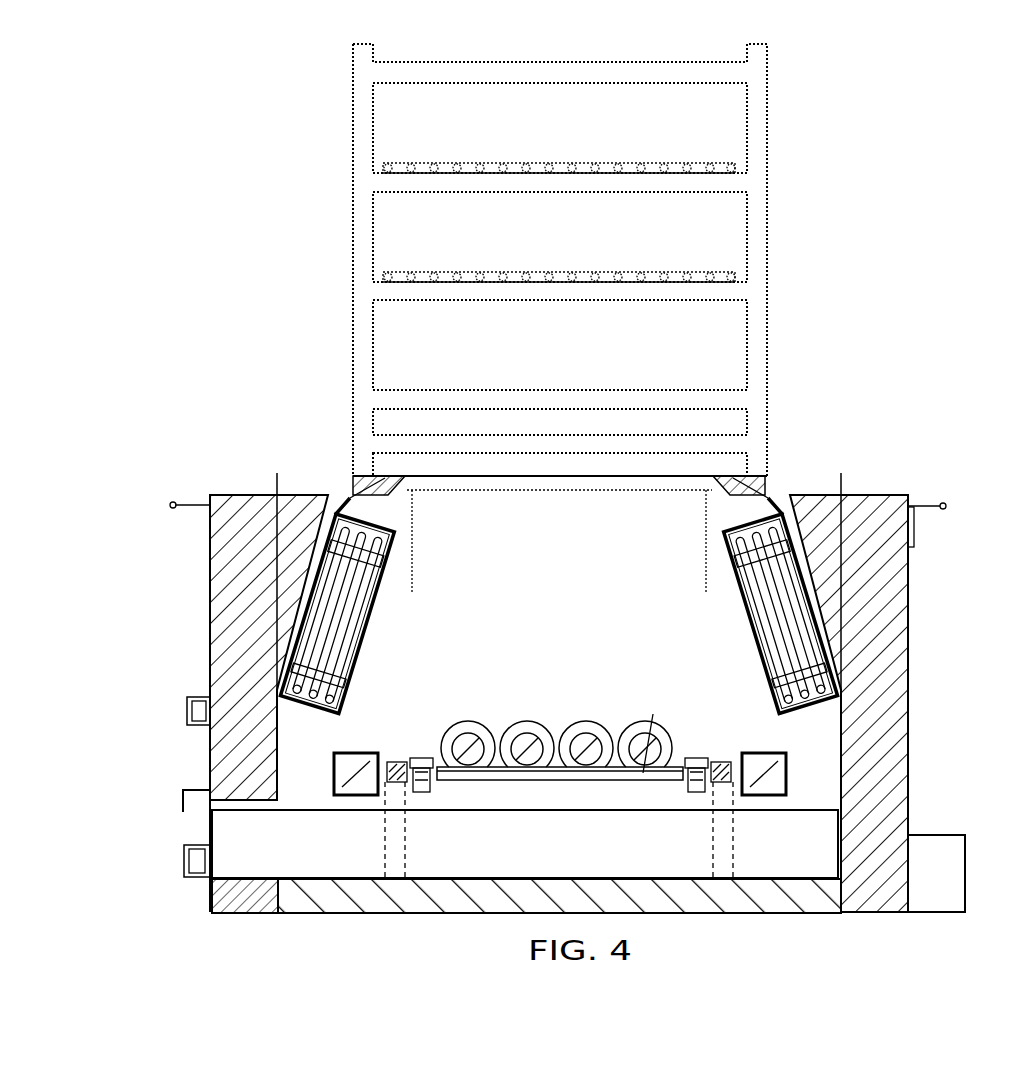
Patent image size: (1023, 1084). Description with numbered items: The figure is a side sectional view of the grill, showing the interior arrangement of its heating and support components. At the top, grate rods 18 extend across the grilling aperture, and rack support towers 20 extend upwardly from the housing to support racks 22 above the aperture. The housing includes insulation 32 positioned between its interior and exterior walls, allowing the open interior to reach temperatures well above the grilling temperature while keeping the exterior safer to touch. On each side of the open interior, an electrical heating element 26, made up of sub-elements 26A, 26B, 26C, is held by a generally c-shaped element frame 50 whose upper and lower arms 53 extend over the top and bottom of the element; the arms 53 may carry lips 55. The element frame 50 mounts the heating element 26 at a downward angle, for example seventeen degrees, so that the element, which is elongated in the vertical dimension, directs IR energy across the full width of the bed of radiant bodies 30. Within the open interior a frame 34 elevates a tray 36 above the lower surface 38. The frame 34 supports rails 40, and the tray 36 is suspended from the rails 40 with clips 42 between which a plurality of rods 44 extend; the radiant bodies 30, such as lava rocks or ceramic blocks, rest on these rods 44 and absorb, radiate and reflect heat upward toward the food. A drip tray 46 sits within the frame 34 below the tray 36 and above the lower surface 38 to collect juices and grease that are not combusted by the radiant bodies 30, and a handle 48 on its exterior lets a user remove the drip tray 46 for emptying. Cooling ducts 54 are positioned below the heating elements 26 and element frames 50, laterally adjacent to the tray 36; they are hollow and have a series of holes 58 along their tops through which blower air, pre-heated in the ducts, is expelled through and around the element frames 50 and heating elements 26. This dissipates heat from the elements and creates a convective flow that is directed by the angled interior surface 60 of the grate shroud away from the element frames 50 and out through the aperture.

The grate rods 18 is at (700, 485).
The rack support towers 20 is at (758, 90).
The racks 22 is at (712, 165).
The electrical heating element 26 is at (312, 596).
The sub-element 26A is at (335, 710).
The sub-element 26B is at (330, 715).
The sub-element 26C is at (335, 705).
The radiant bodies 30 is at (526, 722).
The insulation 32 is at (215, 542).
The frame 34 is at (720, 762).
The tray 36 is at (654, 729).
The lower surface 38 is at (818, 878).
The rails 40 is at (695, 758).
The clips 42 is at (432, 792).
The rods 44 is at (565, 780).
The drip tray 46 is at (525, 858).
The handle 48 is at (203, 790).
The element frame 50 is at (398, 532).
The arms 53 is at (380, 498).
The cooling ducts 54 is at (351, 802).
The lips 55 is at (405, 565).
The holes 58 is at (358, 750).
The interior surface 60 is at (345, 500).